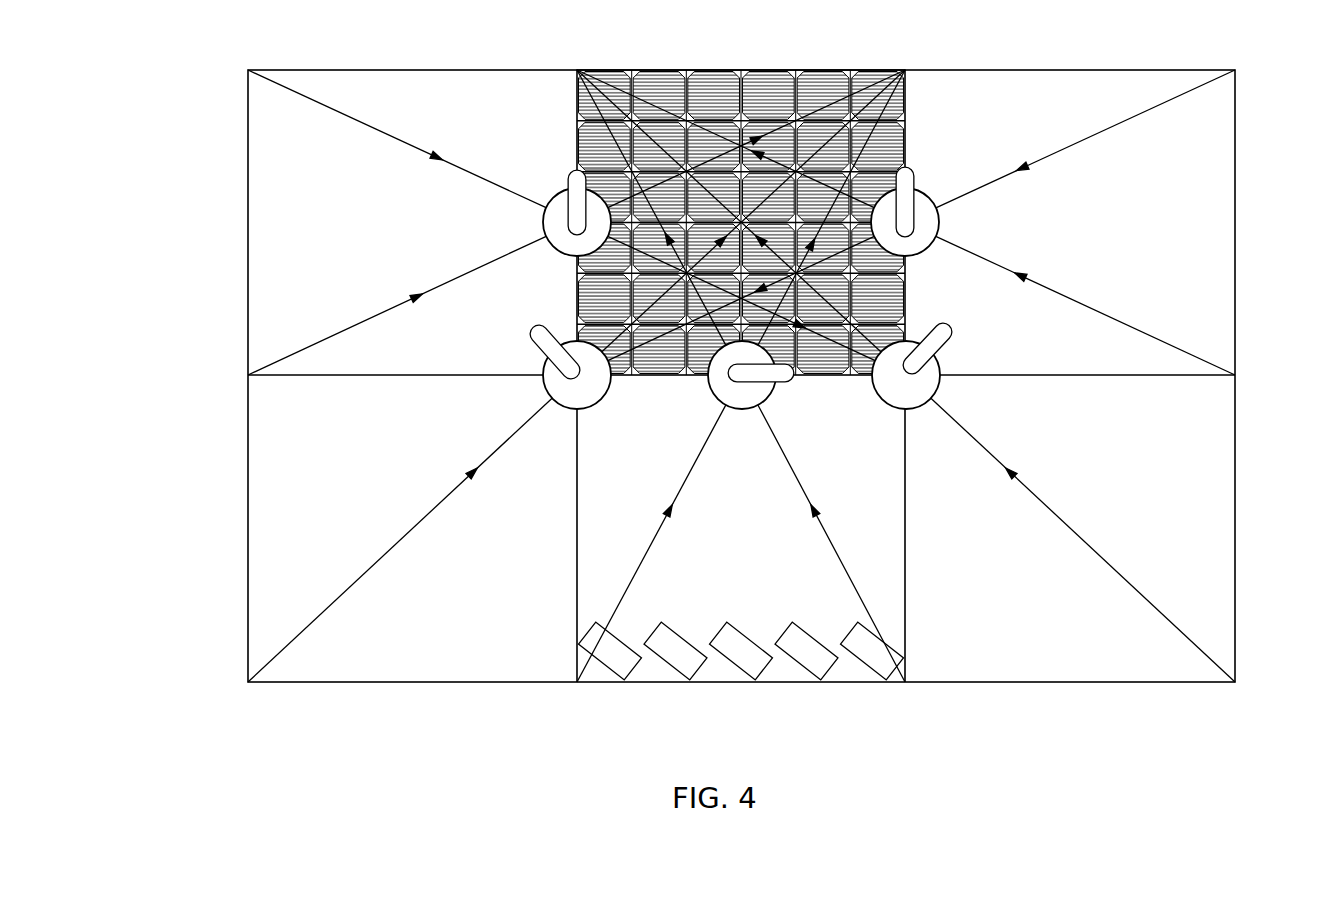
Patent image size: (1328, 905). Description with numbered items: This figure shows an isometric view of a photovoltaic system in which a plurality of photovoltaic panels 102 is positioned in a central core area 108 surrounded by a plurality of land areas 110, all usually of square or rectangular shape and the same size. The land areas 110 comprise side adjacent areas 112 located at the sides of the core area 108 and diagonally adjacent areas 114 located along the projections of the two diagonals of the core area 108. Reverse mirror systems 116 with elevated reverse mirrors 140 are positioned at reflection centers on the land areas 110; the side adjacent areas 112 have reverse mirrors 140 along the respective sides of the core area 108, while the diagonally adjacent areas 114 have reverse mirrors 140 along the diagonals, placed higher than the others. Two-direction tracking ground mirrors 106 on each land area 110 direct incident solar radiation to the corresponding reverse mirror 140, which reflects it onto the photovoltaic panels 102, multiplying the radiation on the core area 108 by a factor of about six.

The photovoltaic panel 102 is at (852, 70).
The ground mirror 106 is at (680, 653).
The core area 108 is at (683, 82).
The land area 110 is at (422, 95).
The side adjacent area 112 is at (258, 186).
The diagonally adjacent area 114 is at (1218, 515).
The reverse mirror system 116 is at (553, 380).
The reverse mirror 140 is at (554, 199).